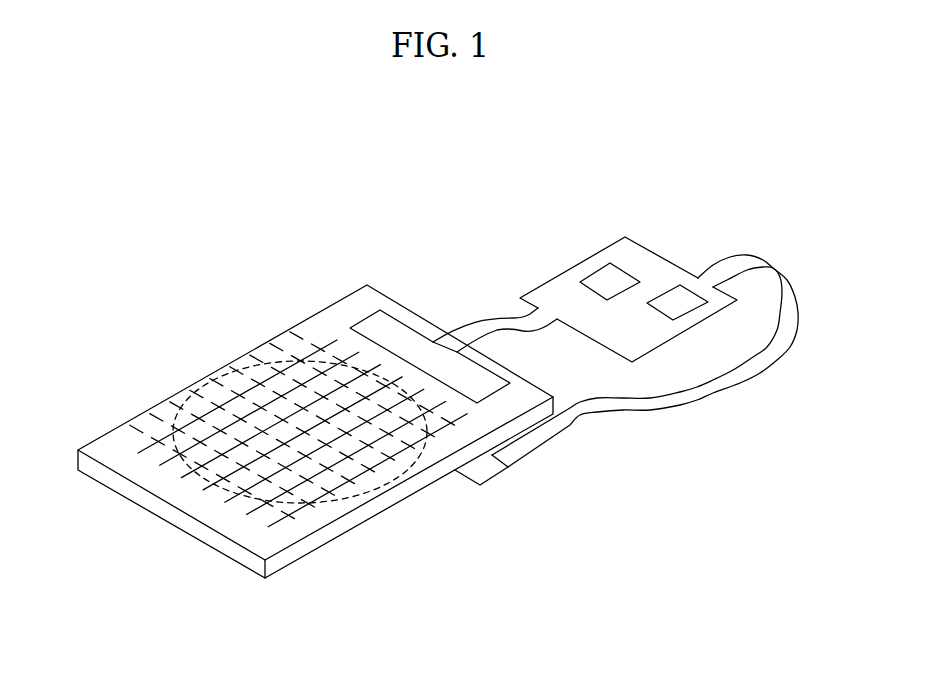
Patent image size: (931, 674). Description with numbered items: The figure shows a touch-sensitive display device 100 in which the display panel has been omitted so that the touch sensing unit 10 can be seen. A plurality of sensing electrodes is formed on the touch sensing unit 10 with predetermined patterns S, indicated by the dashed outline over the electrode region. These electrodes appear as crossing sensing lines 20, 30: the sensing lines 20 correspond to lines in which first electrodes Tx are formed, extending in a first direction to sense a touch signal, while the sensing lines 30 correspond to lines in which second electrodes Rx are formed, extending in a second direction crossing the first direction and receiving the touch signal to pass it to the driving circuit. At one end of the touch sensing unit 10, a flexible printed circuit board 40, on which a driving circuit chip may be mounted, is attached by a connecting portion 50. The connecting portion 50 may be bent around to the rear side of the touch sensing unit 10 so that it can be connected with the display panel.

The touch-sensitive display device 100 is at (457, 202).
The touch sensing unit 10 is at (185, 528).
The sensing lines 20 is at (302, 518).
The sensing lines 30 is at (305, 520).
The predetermined patterns S is at (409, 472).
The flexible printed circuit board 40 is at (593, 257).
The connecting portion 50 is at (492, 319).